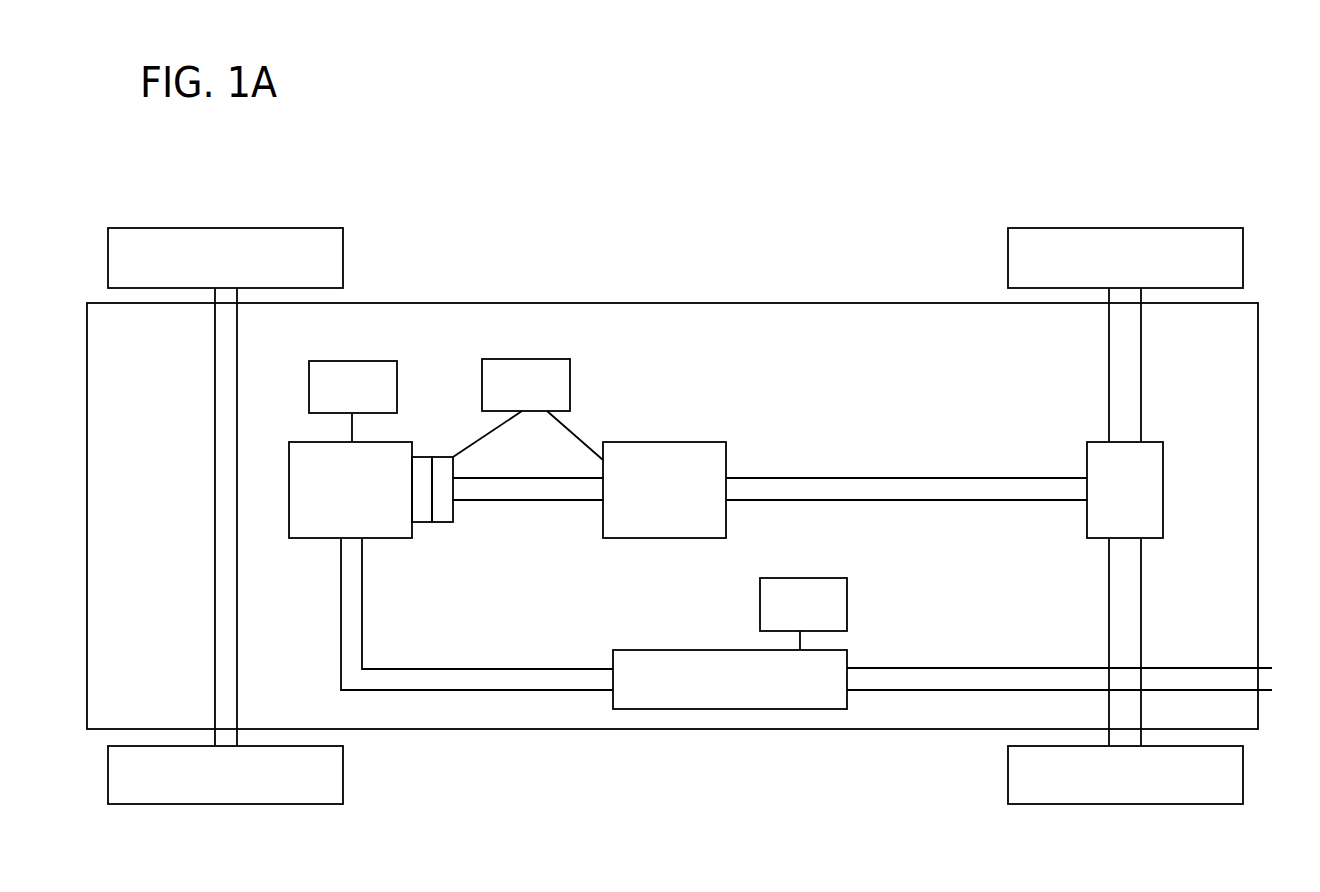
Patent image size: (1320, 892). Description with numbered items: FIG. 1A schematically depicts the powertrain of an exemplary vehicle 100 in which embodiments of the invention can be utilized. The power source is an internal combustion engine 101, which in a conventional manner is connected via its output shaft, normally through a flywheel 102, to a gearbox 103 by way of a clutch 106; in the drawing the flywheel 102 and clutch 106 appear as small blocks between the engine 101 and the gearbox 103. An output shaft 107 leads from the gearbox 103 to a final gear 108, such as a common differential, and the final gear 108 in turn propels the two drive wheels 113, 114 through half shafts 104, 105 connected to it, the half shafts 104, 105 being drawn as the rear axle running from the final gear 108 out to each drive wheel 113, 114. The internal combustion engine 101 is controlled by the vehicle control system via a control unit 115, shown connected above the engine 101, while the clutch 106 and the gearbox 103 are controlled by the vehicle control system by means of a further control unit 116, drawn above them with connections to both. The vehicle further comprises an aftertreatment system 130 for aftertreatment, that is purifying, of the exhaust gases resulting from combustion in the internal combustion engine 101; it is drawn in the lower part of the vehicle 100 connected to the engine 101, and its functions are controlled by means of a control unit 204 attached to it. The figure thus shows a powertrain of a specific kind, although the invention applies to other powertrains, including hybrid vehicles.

The vehicle 100 is at (577, 136).
The internal combustion engine 101 is at (322, 527).
The flywheel 102 is at (427, 522).
The gearbox 103 is at (667, 453).
The half shaft 104 is at (1129, 363).
The half shaft 105 is at (1137, 650).
The clutch 106 is at (442, 513).
The output shaft 107 is at (1003, 495).
The final gear 108 is at (1157, 484).
The drive wheel 113 is at (1237, 250).
The drive wheel 114 is at (1238, 778).
The control unit 115 is at (353, 396).
The control unit 116 is at (547, 398).
The aftertreatment system 130 is at (715, 663).
The control unit 204 is at (803, 613).